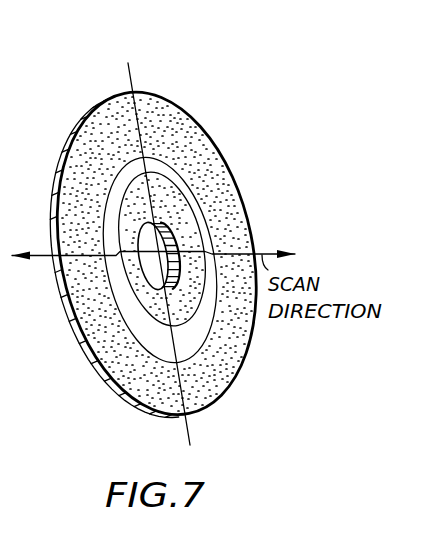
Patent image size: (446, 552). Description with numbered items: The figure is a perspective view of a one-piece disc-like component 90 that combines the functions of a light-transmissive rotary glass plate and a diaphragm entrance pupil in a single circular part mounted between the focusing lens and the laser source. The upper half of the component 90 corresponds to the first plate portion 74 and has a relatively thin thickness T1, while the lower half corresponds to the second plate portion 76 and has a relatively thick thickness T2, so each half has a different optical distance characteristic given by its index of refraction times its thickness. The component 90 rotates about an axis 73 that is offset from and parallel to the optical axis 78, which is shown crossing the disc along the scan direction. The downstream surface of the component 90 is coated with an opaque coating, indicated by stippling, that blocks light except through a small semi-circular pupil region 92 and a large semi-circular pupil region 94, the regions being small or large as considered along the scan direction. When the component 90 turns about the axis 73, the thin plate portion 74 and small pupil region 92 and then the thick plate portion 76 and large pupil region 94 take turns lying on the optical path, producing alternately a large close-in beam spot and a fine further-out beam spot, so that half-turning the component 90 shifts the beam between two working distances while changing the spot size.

The first plate portion 74 is at (188, 120).
The second plate portion 76 is at (240, 357).
The small semi-circular pupil region 92 is at (197, 190).
The large semi-circular pupil region 94 is at (192, 337).
The axis 73 is at (175, 233).
The one-piece disc-like component 90 is at (167, 53).
The optical axis 78 is at (110, 258).
The small thickness T1 is at (78, 129).
The larger thickness T2 is at (118, 386).